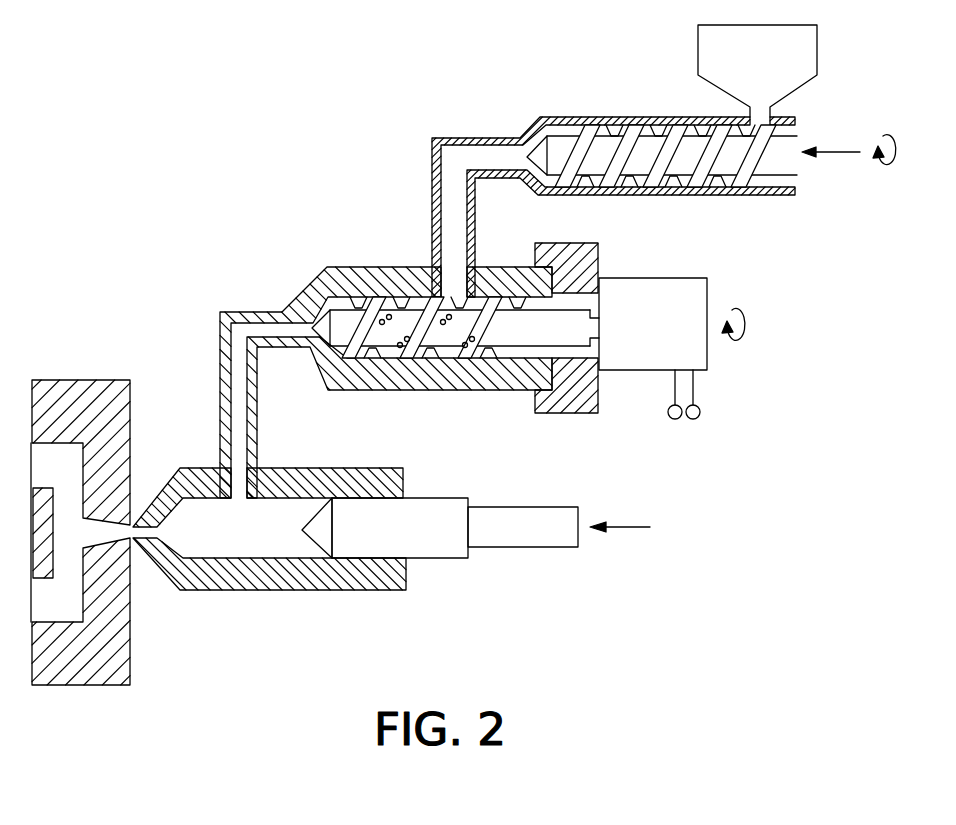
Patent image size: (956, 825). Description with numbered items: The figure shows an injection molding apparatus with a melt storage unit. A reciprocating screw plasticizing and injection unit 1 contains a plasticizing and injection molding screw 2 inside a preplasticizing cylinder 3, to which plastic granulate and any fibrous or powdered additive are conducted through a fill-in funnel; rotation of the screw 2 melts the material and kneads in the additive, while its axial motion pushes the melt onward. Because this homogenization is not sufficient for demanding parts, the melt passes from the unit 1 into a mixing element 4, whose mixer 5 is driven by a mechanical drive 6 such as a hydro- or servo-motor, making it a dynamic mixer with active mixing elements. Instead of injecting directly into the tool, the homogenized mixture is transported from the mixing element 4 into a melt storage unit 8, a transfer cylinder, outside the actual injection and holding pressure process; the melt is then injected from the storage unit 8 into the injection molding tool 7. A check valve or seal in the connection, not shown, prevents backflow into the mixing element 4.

The reciprocating screw plasticizing and injection unit 1 is at (682, 99).
The plasticizing and injection molding screw 2 is at (657, 158).
The preplasticizing cylinder 3 is at (567, 119).
The mixing element 4 is at (343, 279).
The mixer 5 is at (392, 309).
The mechanical drive 6 is at (650, 360).
The injection molding tool 7 is at (82, 383).
The melt storage unit 8 is at (265, 548).